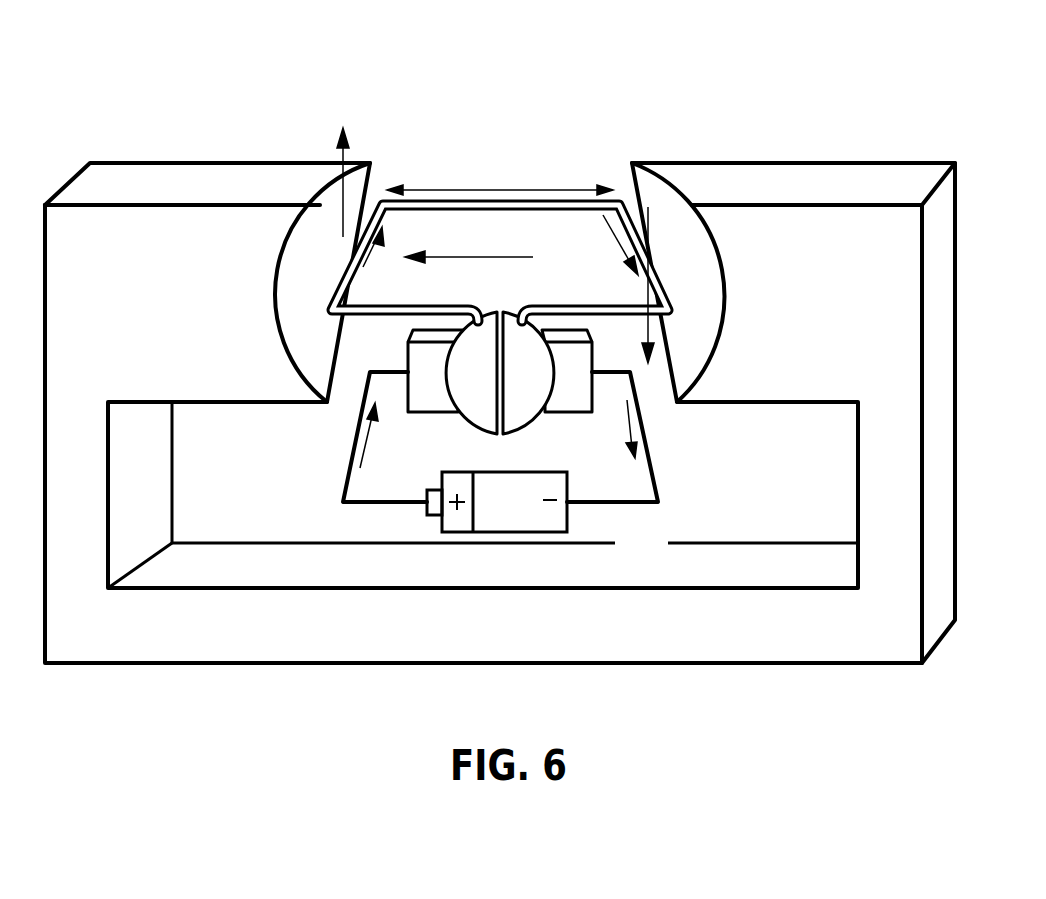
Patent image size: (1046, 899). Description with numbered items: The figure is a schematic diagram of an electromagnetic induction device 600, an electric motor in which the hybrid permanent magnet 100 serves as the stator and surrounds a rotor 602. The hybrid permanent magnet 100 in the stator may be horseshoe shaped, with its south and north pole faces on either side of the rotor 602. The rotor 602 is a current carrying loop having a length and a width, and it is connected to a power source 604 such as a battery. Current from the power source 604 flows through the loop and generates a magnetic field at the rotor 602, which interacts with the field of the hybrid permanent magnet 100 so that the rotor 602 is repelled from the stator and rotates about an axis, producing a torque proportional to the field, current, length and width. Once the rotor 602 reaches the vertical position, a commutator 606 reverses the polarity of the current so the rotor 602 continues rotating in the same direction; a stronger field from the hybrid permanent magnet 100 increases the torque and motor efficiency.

The electromagnetic induction device 600 is at (521, 32).
The hybrid permanent magnet 100 is at (722, 172).
The rotor 602 is at (557, 203).
The power source 604 is at (568, 517).
The commutator 606 is at (455, 413).